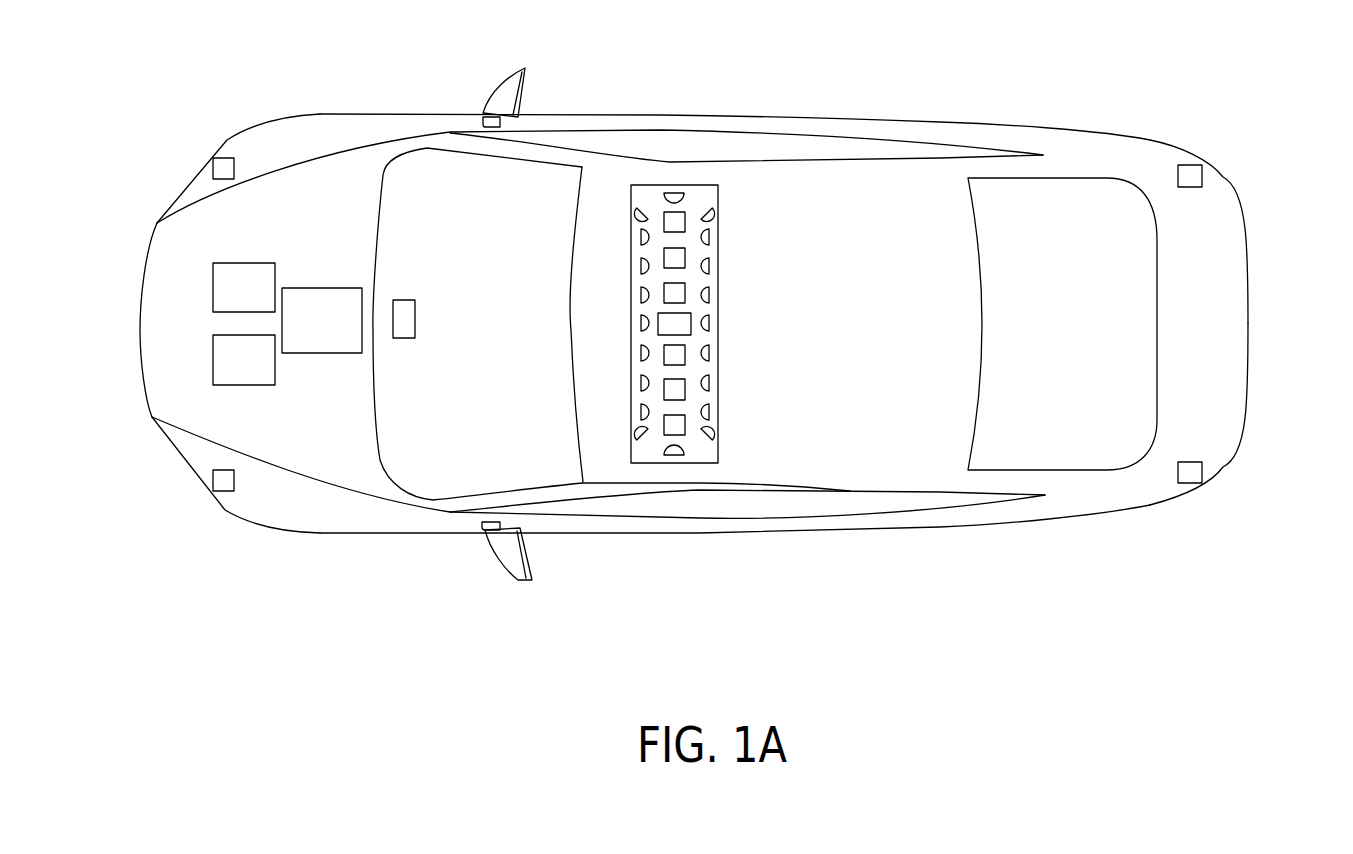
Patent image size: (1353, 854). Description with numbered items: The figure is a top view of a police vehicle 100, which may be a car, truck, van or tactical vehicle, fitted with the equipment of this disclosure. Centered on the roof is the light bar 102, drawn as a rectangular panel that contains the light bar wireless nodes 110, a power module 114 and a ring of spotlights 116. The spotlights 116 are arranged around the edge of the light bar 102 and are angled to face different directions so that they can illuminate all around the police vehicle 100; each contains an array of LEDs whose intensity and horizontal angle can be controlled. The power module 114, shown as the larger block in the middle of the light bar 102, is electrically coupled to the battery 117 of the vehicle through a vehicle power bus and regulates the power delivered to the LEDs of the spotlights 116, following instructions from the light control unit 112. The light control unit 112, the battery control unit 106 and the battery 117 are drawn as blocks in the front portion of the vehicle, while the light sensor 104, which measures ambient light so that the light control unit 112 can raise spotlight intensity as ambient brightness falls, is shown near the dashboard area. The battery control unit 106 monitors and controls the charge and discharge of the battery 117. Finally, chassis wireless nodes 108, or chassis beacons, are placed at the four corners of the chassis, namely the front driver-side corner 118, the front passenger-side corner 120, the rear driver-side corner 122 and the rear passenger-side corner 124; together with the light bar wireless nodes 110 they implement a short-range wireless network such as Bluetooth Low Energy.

The police vehicle 100 is at (1252, 323).
The light bar 102 is at (693, 185).
The light sensor 104 is at (404, 338).
The battery control unit 106 is at (244, 360).
The chassis wireless nodes 108 is at (213, 168).
The light bar wireless nodes 110 is at (664, 222).
The light control unit 112 is at (244, 287).
The power module 114 is at (658, 318).
The spotlights 116 is at (647, 202).
The battery 117 is at (322, 320).
The front driver-side corner 118 is at (225, 505).
The front passenger-side corner 120 is at (229, 138).
The rear driver-side corner 122 is at (1186, 502).
The rear passenger-side corner 124 is at (1187, 144).